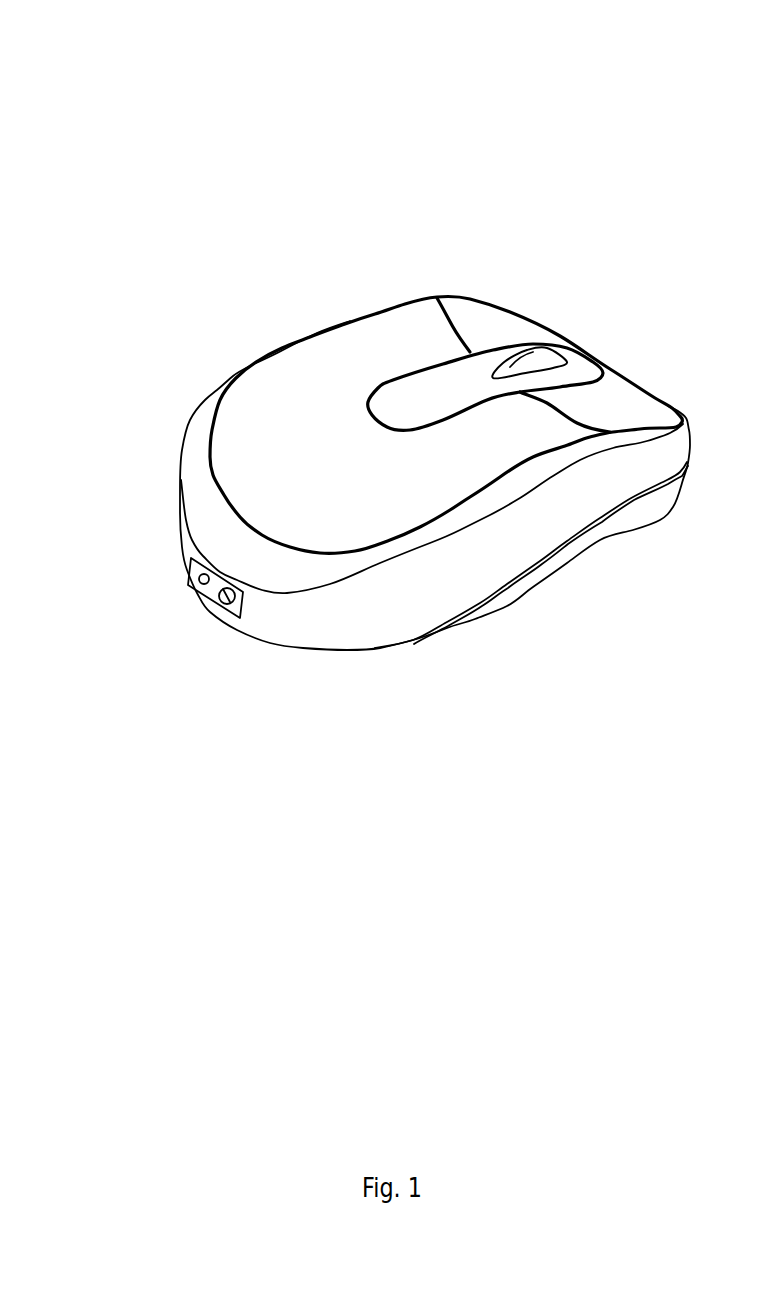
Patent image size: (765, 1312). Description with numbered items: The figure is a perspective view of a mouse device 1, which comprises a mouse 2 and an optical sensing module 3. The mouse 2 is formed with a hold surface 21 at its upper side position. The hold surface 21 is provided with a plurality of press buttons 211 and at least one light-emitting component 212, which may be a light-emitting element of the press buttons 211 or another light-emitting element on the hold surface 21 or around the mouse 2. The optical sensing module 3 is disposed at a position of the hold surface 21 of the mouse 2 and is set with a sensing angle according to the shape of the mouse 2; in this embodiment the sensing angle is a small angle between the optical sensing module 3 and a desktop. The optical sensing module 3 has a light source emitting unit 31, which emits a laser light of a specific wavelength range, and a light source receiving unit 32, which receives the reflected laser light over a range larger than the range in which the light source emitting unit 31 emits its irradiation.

The mouse device 1 is at (554, 172).
The mouse 2 is at (318, 332).
The hold surface 21 is at (270, 430).
The press buttons 211 is at (503, 333).
The light-emitting component 212 is at (440, 390).
The optical sensing module 3 is at (213, 603).
The light source emitting unit 31 is at (203, 578).
The light source receiving unit 32 is at (232, 604).